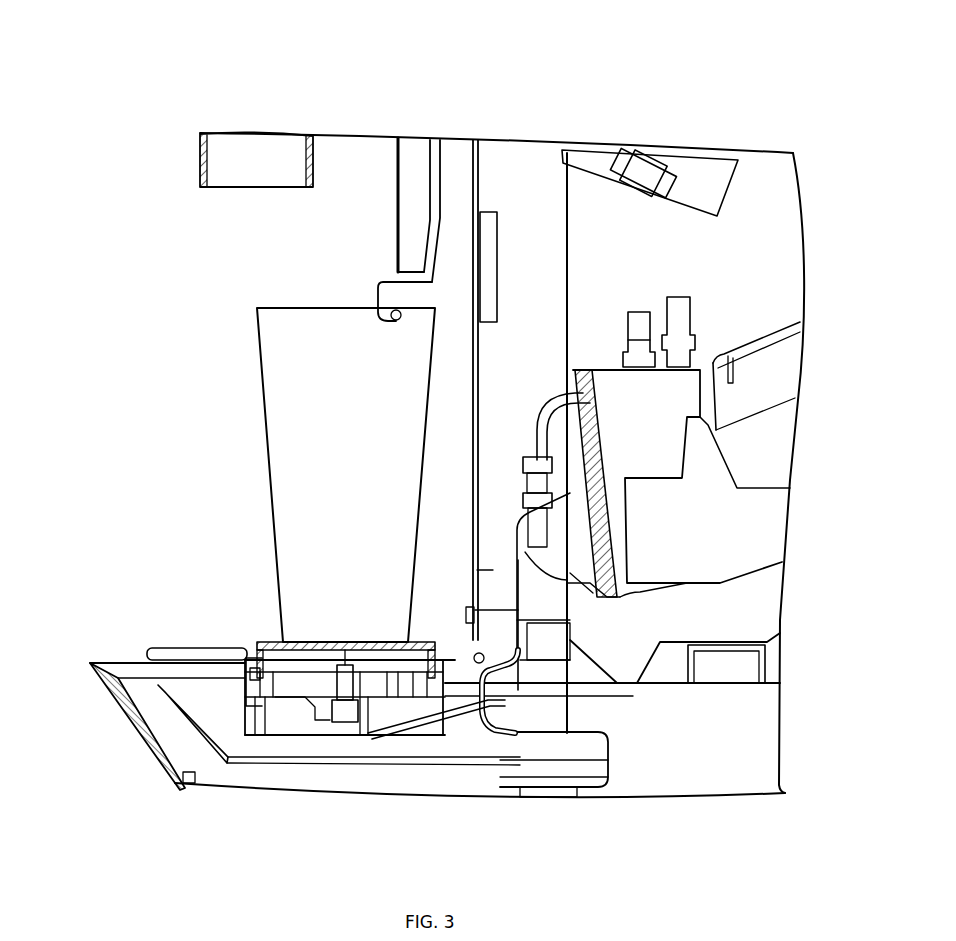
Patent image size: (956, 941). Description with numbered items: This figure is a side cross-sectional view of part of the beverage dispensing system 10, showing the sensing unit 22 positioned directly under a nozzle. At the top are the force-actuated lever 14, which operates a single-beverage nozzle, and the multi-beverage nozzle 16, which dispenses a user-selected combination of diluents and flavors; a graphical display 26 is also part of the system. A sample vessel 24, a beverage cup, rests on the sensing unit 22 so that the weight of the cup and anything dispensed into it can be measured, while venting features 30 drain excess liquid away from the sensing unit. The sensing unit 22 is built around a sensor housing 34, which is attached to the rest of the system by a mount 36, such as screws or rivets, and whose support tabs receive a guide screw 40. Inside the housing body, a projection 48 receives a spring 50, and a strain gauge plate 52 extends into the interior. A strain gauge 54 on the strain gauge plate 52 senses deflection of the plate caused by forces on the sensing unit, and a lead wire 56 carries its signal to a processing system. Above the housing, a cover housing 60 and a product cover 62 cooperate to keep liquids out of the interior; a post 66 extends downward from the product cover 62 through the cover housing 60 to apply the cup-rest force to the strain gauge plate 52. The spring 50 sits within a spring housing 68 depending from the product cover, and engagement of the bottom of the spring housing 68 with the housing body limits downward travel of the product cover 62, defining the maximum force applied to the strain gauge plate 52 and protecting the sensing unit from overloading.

The beverage dispensing system 10 is at (138, 95).
The force-actuated lever 14 is at (432, 220).
The multi-beverage nozzle 16 is at (200, 165).
The sensing unit 22 is at (158, 617).
The sample vessel 24 is at (268, 445).
The graphical display 26 is at (265, 645).
The venting features 30 is at (226, 721).
The sensor housing 34 is at (313, 700).
The mount 36 is at (553, 742).
The guide screw 40 is at (253, 705).
The projection 48 is at (347, 722).
The spring 50 is at (337, 722).
The strain gauge plate 52 is at (370, 715).
The strain gauge 54 is at (364, 722).
The lead wire 56 is at (487, 705).
The cover housing 60 is at (404, 675).
The product cover 62 is at (243, 690).
The post 66 is at (342, 690).
The spring housing 68 is at (330, 660).